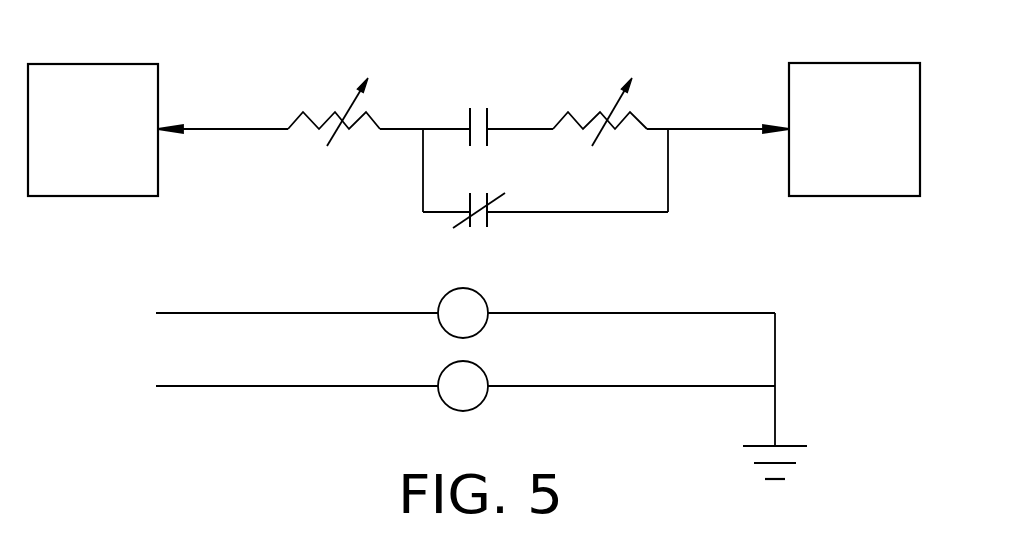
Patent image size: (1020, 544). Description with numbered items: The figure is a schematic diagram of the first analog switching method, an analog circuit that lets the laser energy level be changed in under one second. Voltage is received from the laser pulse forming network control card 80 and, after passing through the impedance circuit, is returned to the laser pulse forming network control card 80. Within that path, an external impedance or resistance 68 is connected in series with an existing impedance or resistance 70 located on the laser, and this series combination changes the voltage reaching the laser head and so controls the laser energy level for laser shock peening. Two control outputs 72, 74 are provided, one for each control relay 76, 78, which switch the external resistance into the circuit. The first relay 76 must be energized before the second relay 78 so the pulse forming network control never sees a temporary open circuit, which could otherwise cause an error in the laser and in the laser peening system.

The external impedance or resistance 68 is at (593, 118).
The existing impedance or resistance 70 is at (327, 115).
The control output 72 is at (229, 313).
The control output 74 is at (229, 386).
The first relay 76 is at (468, 120).
The second relay 78 is at (497, 192).
The laser pulse forming network control card 80 is at (110, 145).